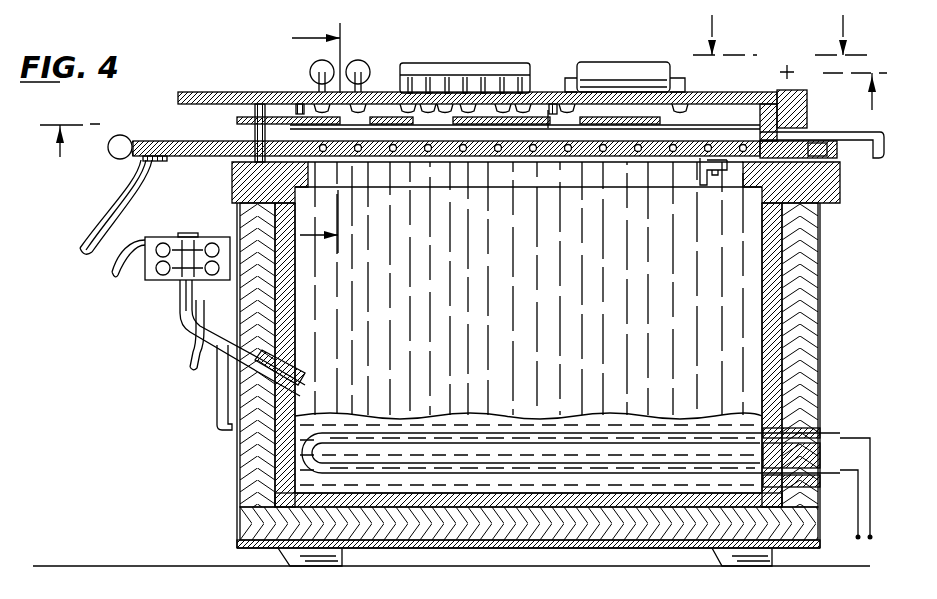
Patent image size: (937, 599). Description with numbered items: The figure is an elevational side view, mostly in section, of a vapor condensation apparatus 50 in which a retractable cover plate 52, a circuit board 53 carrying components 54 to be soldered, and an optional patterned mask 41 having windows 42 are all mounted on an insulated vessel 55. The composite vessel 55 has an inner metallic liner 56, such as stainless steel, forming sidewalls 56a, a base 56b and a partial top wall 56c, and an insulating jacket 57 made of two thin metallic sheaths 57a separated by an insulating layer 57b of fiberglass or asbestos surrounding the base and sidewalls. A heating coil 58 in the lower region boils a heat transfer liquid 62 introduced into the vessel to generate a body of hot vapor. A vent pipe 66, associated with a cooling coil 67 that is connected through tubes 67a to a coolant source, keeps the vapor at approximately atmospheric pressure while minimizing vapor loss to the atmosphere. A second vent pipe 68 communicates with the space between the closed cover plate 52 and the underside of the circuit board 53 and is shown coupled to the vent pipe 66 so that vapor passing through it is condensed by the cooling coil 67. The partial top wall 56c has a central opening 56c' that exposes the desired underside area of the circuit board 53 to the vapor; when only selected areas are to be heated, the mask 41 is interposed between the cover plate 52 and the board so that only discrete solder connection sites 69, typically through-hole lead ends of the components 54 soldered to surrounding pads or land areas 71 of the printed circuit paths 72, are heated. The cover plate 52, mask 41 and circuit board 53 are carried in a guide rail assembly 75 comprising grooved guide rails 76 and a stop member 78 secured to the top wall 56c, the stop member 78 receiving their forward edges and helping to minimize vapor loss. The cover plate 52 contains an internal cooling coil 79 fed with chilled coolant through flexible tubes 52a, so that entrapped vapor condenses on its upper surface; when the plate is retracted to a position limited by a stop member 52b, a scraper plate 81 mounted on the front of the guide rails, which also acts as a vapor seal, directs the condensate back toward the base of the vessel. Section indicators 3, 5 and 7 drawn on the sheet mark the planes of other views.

The vapor condensation apparatus 50 is at (167, 401).
The retractable cover plate 52 is at (168, 140).
The flexible tubes 52a is at (83, 240).
The stop member 52b is at (702, 187).
The circuit board 53 is at (257, 92).
The components 54 is at (400, 68).
The insulated vessel 55 is at (820, 365).
The inner metallic liner 56 is at (783, 335).
The sidewalls 56a is at (762, 305).
The base 56b is at (460, 507).
The partial top wall 56c is at (773, 197).
The central opening 56c' is at (497, 203).
The insulating jacket 57 is at (820, 233).
The thin metallic sheaths 57a is at (782, 280).
The insulating layer 57b is at (807, 305).
The heating coil 58 is at (835, 468).
The heat transfer liquid 62 is at (463, 420).
The vent pipe 66 is at (177, 310).
The cooling coil 67 is at (150, 272).
The tubes 67a is at (113, 273).
The vent pipe 68 is at (882, 138).
The solder connection sites 69 is at (470, 110).
The pads or land areas 71 is at (433, 104).
The printed circuit paths 72 is at (553, 100).
The guide rail assembly 75 is at (810, 110).
The guide rail 76 is at (697, 90).
The stop member 78 is at (803, 92).
The cooling coil 79 is at (453, 162).
The scraper plate 81 is at (255, 126).
The patterned mask 41 is at (548, 128).
The windows 42 is at (575, 126).
The section line 3 is at (465, 126).
The section line 5 is at (316, 142).
The section line 7 is at (782, 34).